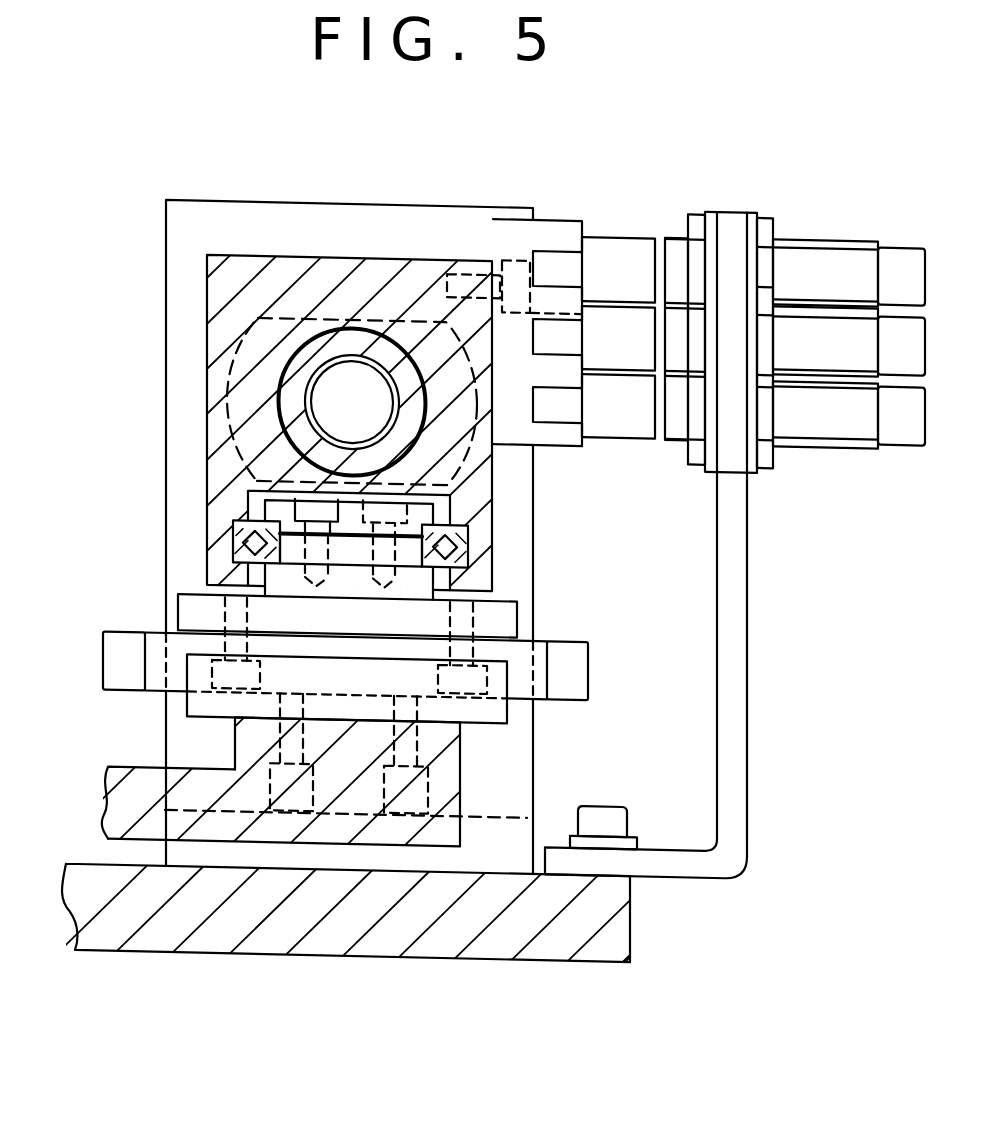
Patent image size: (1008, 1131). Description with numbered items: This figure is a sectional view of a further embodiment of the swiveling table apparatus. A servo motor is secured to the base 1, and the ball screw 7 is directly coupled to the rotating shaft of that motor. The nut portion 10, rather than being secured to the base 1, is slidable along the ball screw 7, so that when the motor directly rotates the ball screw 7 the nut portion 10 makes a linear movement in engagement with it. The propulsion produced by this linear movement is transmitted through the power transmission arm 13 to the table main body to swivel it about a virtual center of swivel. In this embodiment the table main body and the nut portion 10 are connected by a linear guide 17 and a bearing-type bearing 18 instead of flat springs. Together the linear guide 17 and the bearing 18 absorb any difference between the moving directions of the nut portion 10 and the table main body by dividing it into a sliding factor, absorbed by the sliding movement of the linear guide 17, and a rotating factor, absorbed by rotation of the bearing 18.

The base 1 is at (480, 944).
The ball screw 7 is at (322, 402).
The nut portion 10 is at (323, 268).
The power transmission arm 13 is at (115, 772).
The linear guide 17 is at (545, 636).
The bearing 18 is at (470, 537).